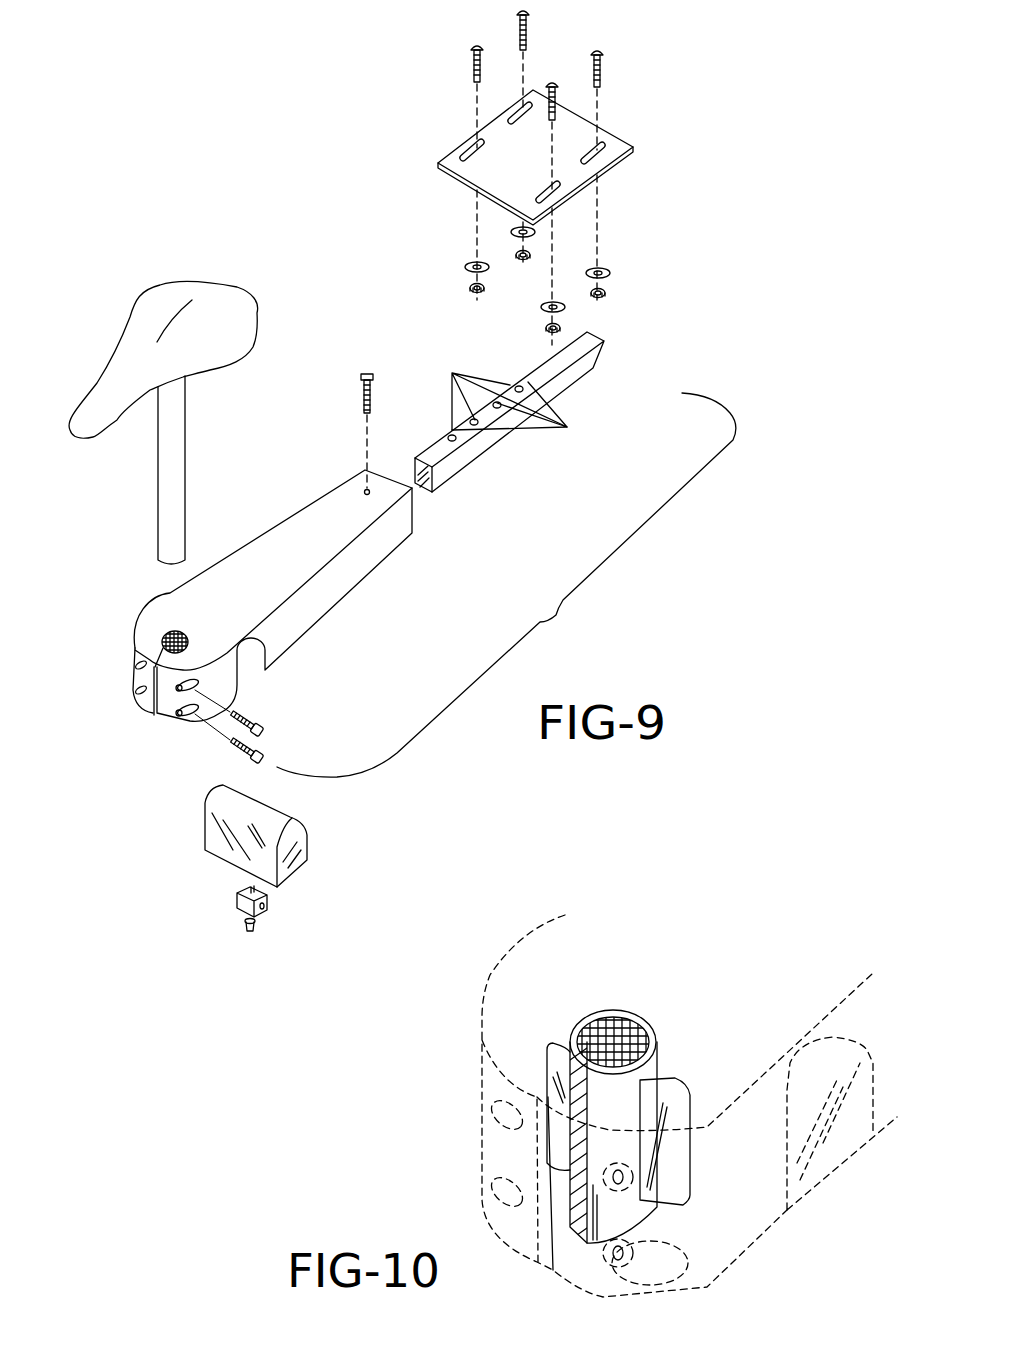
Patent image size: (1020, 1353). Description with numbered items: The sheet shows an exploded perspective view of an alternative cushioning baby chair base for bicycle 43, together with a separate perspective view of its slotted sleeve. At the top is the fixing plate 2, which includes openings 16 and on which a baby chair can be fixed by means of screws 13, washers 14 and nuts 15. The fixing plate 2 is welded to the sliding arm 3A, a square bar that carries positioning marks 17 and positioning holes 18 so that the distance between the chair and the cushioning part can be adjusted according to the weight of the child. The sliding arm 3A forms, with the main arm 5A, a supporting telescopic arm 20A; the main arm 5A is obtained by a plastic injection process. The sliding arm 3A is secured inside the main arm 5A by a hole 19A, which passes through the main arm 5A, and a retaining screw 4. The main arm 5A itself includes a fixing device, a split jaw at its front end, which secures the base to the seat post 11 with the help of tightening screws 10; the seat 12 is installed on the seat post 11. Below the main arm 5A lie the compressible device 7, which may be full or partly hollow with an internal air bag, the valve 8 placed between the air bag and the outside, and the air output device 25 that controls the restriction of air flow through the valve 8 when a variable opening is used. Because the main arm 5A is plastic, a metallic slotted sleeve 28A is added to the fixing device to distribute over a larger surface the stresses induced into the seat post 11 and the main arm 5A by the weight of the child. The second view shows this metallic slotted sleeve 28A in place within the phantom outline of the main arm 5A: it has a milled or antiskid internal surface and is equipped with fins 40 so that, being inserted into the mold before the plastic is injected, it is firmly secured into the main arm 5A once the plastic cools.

In FIG. 9, the fixing plate 2 is at (607, 163).
In FIG. 9, the sliding arm 3A is at (457, 462).
In FIG. 9, the retaining screw 4 is at (358, 387).
In FIG. 9, the main arm 5A is at (372, 547).
In FIG. 10, the main arm 5A is at (542, 975).
In FIG. 9, the compressible device 7 is at (305, 864).
In FIG. 10, the compressible device 7 is at (823, 1172).
In FIG. 9, the valve 8 is at (268, 905).
In FIG. 9, the tightening screws 10 is at (256, 731).
In FIG. 9, the seat post 11 is at (163, 510).
In FIG. 9, the seat 12 is at (245, 328).
In FIG. 9, the screws 13 is at (607, 57).
In FIG. 9, the washers 14 is at (609, 275).
In FIG. 9, the nuts 15 is at (607, 296).
In FIG. 9, the openings 16 is at (462, 160).
In FIG. 9, the positioning marks 17 is at (527, 411).
In FIG. 9, the positioning holes 18 is at (492, 389).
In FIG. 9, the hole 19A is at (364, 491).
In FIG. 9, the supporting telescopic arm 20A is at (506, 585).
In FIG. 9, the air output device 25 is at (256, 926).
In FIG. 9, the metallic slotted sleeve 28A is at (163, 642).
In FIG. 10, the metallic slotted sleeve 28A is at (637, 1015).
In FIG. 10, the fins 40 is at (555, 1057).
In FIG. 9, the cushioning baby chair base for bicycle 43 is at (278, 188).